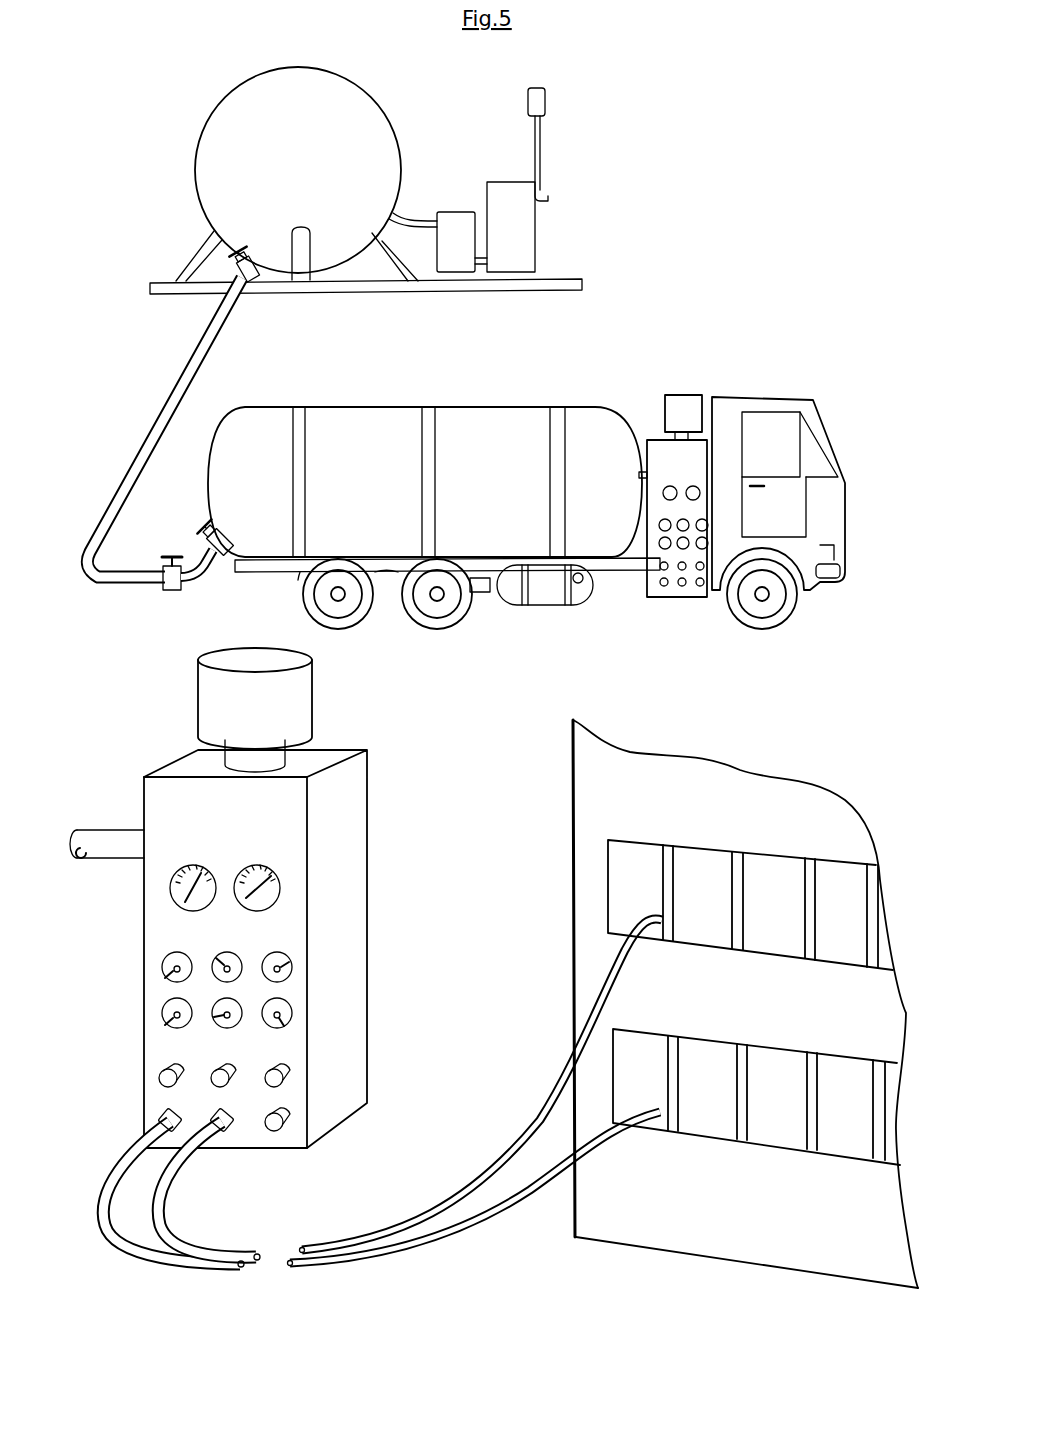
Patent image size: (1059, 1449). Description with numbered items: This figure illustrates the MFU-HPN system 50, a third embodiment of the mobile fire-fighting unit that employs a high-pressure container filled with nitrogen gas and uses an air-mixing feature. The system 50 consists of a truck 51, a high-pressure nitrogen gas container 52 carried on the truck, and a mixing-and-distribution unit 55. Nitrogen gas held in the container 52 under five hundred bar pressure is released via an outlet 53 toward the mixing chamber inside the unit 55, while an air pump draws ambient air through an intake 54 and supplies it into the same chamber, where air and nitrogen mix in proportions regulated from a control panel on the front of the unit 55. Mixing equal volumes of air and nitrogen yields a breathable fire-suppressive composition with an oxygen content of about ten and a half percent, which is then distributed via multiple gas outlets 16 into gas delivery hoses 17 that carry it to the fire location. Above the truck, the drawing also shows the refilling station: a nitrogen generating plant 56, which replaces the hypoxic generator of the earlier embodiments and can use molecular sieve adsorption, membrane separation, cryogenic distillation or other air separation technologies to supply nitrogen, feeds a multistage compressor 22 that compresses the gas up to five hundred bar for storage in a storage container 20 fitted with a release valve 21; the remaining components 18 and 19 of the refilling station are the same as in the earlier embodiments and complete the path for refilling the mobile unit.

The gas outlets 16 is at (178, 1062).
The gas delivery hoses 17 is at (128, 1247).
The refilling station component 18 is at (196, 528).
The refilling station component 19 is at (194, 360).
The storage container 20 is at (298, 173).
The release valve 21 is at (252, 282).
The multistage compressor 22 is at (456, 242).
The MFU-HPN system 50 is at (660, 279).
The truck 51 is at (728, 400).
The high-pressure nitrogen gas container 52 is at (425, 482).
The outlet 53 is at (128, 848).
The intake 54 is at (255, 710).
The mixing-and-distribution unit 55 is at (632, 604).
The nitrogen generating plant 56 is at (511, 180).